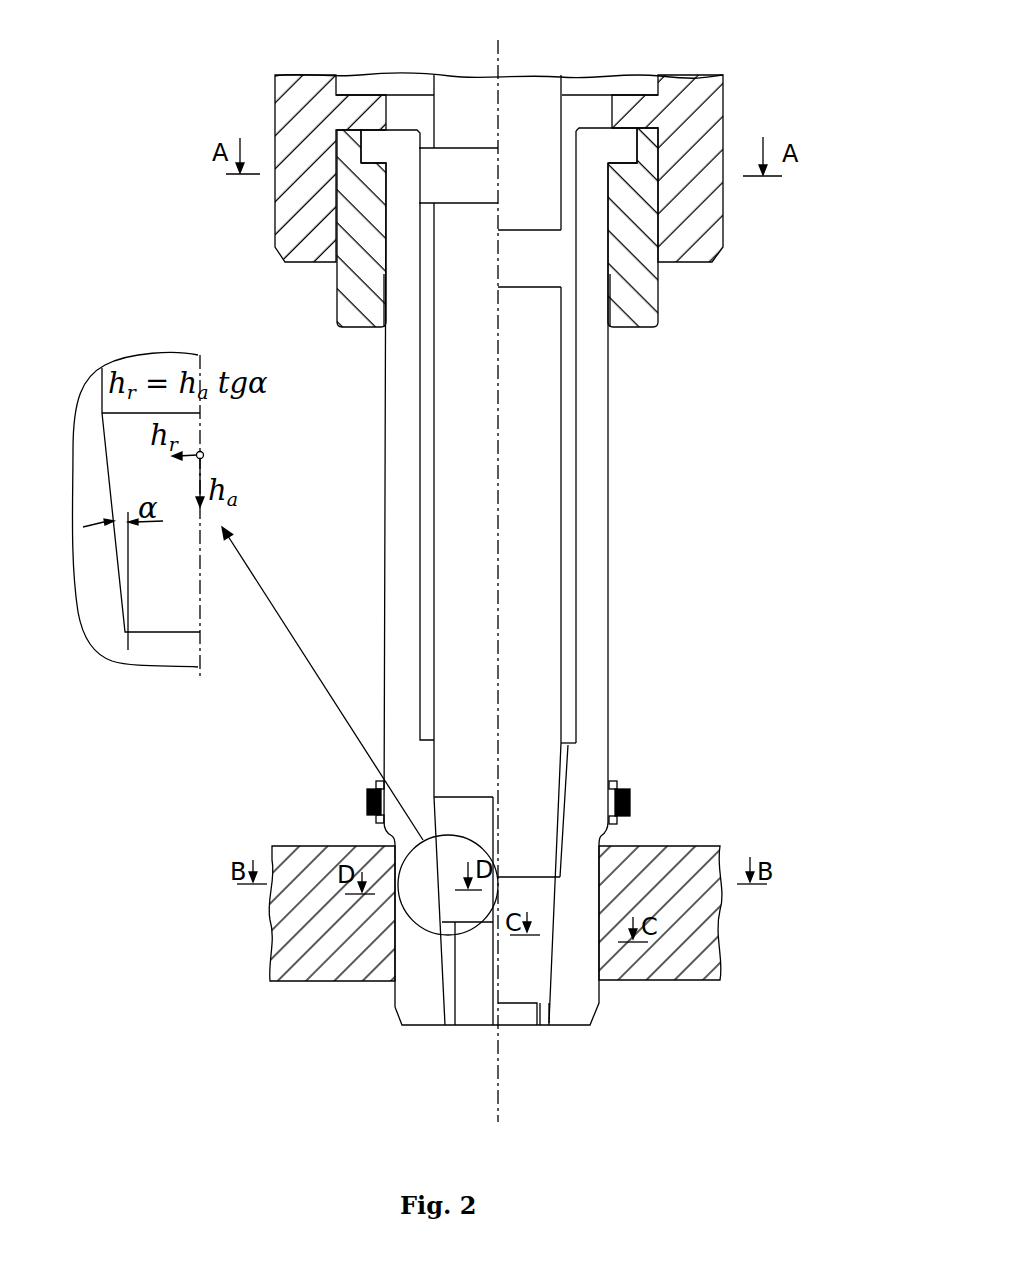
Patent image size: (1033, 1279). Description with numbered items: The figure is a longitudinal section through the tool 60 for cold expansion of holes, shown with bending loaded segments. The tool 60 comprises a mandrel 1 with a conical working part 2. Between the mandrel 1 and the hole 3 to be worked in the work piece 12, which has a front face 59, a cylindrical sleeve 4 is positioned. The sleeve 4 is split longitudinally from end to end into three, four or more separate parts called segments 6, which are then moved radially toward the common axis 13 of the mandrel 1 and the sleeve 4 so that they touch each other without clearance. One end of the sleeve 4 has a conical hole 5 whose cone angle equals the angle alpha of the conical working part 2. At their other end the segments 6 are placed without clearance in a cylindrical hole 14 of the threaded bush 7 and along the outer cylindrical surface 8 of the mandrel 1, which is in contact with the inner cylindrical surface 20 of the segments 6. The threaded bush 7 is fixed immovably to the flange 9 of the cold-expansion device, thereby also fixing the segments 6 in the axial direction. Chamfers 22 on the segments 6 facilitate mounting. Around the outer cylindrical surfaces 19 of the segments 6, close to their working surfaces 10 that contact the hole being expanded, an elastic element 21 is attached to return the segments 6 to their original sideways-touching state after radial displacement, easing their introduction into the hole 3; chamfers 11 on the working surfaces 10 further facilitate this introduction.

The mandrel 1 is at (460, 105).
The conical working part 2 is at (457, 812).
The hole 3 is at (392, 983).
The cylindrical sleeve 4 is at (398, 433).
The conical hole 5 is at (568, 773).
The segments 6 is at (565, 1010).
The threaded bush 7 is at (658, 263).
The outer cylindrical surface 8 is at (467, 175).
The flange 9 is at (290, 115).
The working surfaces 10 is at (390, 1003).
The chamfers 11 is at (597, 1013).
The work piece 12 is at (308, 862).
The common axis 13 is at (495, 605).
The cylindrical hole 14 is at (380, 240).
The outer cylindrical surfaces 19 is at (653, 320).
The inner cylindrical surface 20 is at (577, 443).
The elastic element 21 is at (625, 802).
The chamfers 22 is at (580, 128).
The front face 59 is at (368, 840).
The tool 60 is at (617, 481).